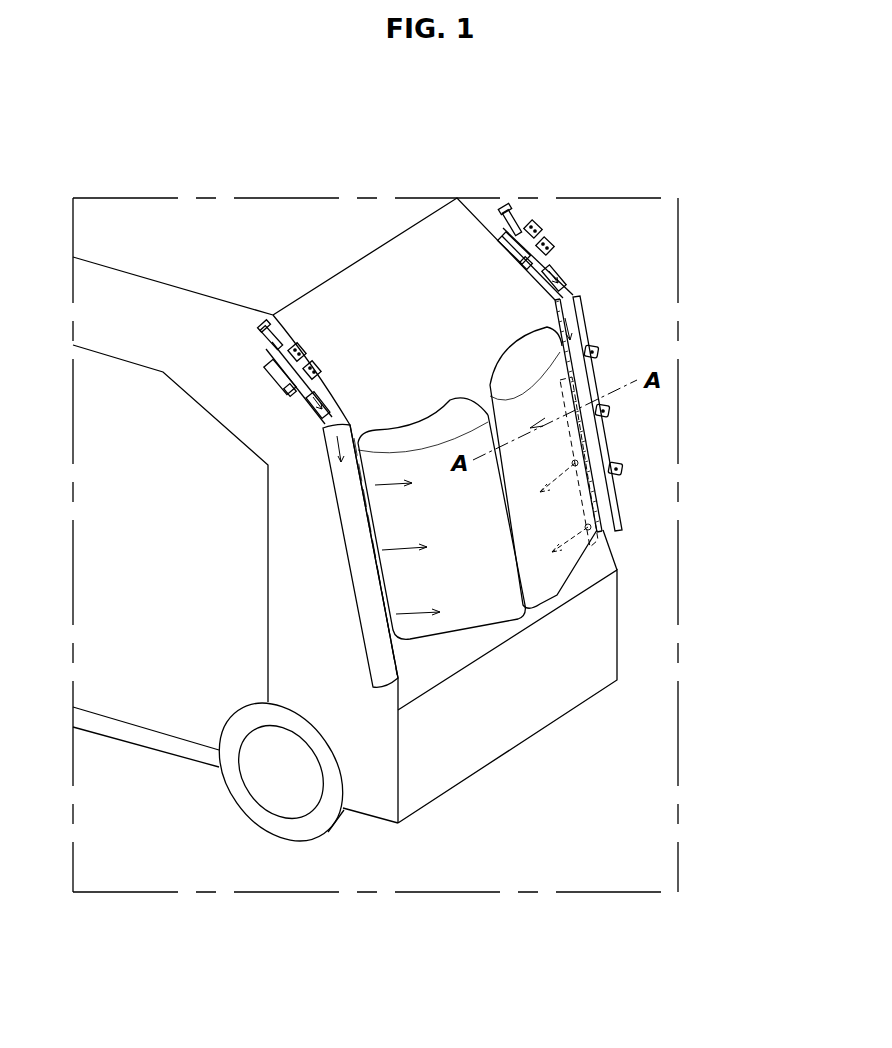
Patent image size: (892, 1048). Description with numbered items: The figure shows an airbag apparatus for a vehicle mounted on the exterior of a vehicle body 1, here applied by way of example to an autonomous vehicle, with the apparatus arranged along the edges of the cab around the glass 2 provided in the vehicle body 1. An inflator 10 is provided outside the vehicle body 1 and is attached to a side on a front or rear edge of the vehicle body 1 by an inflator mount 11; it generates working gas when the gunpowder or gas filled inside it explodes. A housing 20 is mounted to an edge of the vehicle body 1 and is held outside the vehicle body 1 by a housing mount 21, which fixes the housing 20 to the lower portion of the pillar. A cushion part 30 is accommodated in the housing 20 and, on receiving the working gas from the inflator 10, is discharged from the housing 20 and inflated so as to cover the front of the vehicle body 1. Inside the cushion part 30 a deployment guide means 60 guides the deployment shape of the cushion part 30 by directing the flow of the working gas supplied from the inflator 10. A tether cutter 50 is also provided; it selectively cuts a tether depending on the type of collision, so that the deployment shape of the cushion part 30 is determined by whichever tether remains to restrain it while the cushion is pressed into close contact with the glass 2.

The vehicle body 1 is at (290, 218).
The glass 2 is at (445, 245).
The inflator 10 is at (527, 217).
The inflator mount 11 is at (547, 245).
The housing 20 is at (583, 323).
The housing mount 21 is at (600, 360).
The cushion part 30 is at (573, 565).
The tether cutter 50 is at (488, 217).
The deployment guide means 60 is at (583, 511).